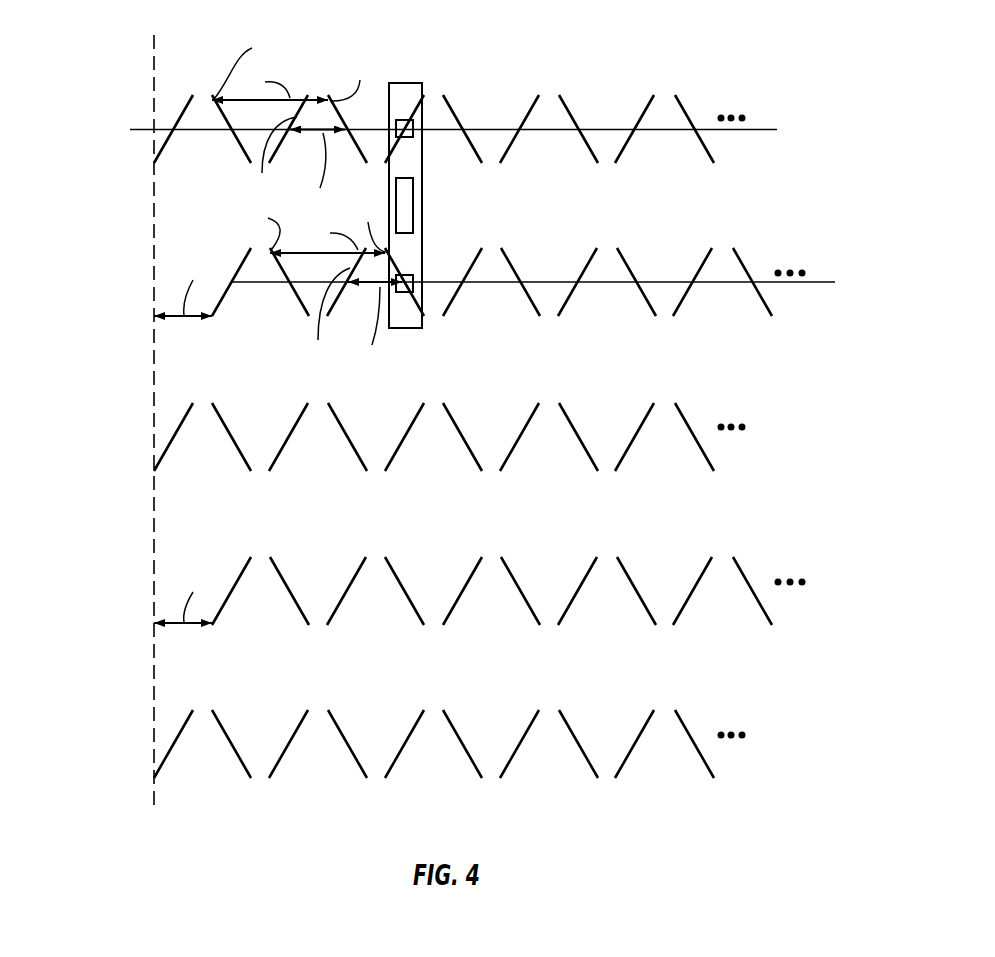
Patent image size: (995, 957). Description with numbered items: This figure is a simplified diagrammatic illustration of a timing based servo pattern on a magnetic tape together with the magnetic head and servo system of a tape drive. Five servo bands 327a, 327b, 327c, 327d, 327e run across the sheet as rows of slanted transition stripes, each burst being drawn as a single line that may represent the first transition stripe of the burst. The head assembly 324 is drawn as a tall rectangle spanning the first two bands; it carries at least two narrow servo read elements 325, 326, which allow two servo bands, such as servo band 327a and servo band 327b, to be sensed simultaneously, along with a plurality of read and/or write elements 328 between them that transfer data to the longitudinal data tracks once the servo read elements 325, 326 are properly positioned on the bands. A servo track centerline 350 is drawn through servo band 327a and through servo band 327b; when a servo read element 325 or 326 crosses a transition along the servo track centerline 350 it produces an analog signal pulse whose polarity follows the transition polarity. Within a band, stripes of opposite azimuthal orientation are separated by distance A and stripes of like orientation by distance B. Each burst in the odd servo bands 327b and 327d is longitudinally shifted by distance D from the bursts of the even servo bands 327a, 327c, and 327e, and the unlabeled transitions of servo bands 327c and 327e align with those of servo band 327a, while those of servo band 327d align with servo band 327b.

The head assembly 324 is at (404, 83).
The servo read element 325 is at (413, 136).
The servo read element 326 is at (413, 290).
The read and/or write elements 328 is at (413, 205).
The servo track centerline 350 is at (765, 130).
The servo band 327a is at (108, 95).
The servo band 327b is at (108, 248).
The servo band 327c is at (108, 403).
The servo band 327d is at (108, 557).
The servo band 327e is at (108, 710).